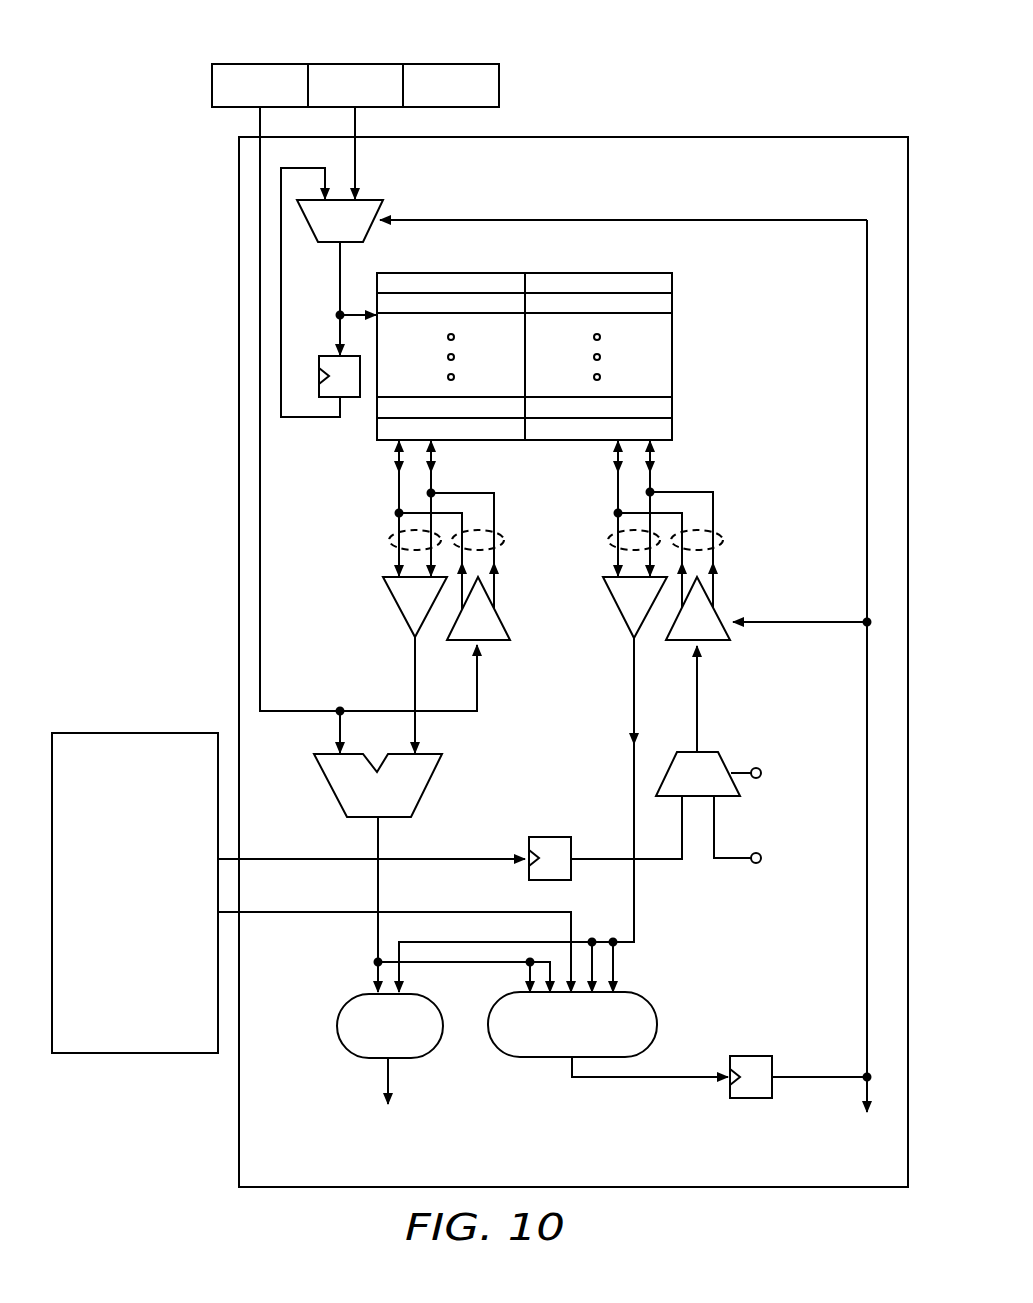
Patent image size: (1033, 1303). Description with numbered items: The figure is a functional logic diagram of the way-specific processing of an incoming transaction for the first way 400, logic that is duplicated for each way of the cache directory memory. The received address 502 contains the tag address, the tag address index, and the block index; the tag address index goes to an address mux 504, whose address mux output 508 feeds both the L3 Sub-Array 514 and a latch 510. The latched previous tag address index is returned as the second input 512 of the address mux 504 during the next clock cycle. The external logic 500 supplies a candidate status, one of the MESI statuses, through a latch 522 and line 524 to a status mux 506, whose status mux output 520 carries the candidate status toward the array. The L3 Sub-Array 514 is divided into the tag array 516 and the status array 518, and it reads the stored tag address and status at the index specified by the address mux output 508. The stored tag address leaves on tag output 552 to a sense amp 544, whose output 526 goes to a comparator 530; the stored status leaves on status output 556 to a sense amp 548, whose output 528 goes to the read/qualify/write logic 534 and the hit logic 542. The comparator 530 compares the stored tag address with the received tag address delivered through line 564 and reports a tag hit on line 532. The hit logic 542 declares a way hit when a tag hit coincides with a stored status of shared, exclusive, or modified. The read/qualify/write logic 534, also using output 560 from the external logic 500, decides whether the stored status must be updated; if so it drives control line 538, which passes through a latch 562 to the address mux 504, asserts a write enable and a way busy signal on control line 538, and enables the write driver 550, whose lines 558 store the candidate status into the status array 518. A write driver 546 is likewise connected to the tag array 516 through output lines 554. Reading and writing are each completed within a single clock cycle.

The way 0 400 is at (238, 303).
The external logic 500 is at (133, 1054).
The received address 502 is at (336, 52).
The address mux 504 is at (371, 199).
The status mux 506 is at (688, 751).
The address mux output 508 is at (338, 291).
The latch 510 is at (338, 352).
The second input 512 is at (312, 420).
The L3 Sub-Array 514 is at (571, 344).
The tag array 516 is at (410, 356).
The status array 518 is at (640, 356).
The status mux output 520 is at (700, 702).
The latch 522 is at (553, 835).
The line 524 is at (596, 861).
The output 526 is at (418, 721).
The output 528 is at (637, 899).
The comparator 530 is at (428, 786).
The line 532 is at (377, 879).
The read/qualify/write logic 534 is at (658, 1023).
The control line 538 is at (770, 219).
The hit logic 542 is at (334, 1026).
The sense amp 544 is at (400, 607).
The write driver 546 is at (498, 620).
The sense amp 548 is at (616, 607).
The write driver 550 is at (682, 646).
The tag output 552 is at (386, 540).
The output lines 554 is at (505, 537).
The status output 556 is at (605, 544).
The lines 558 is at (727, 540).
The output 560 is at (318, 914).
The latch 562 is at (752, 1100).
The line 564 is at (378, 709).